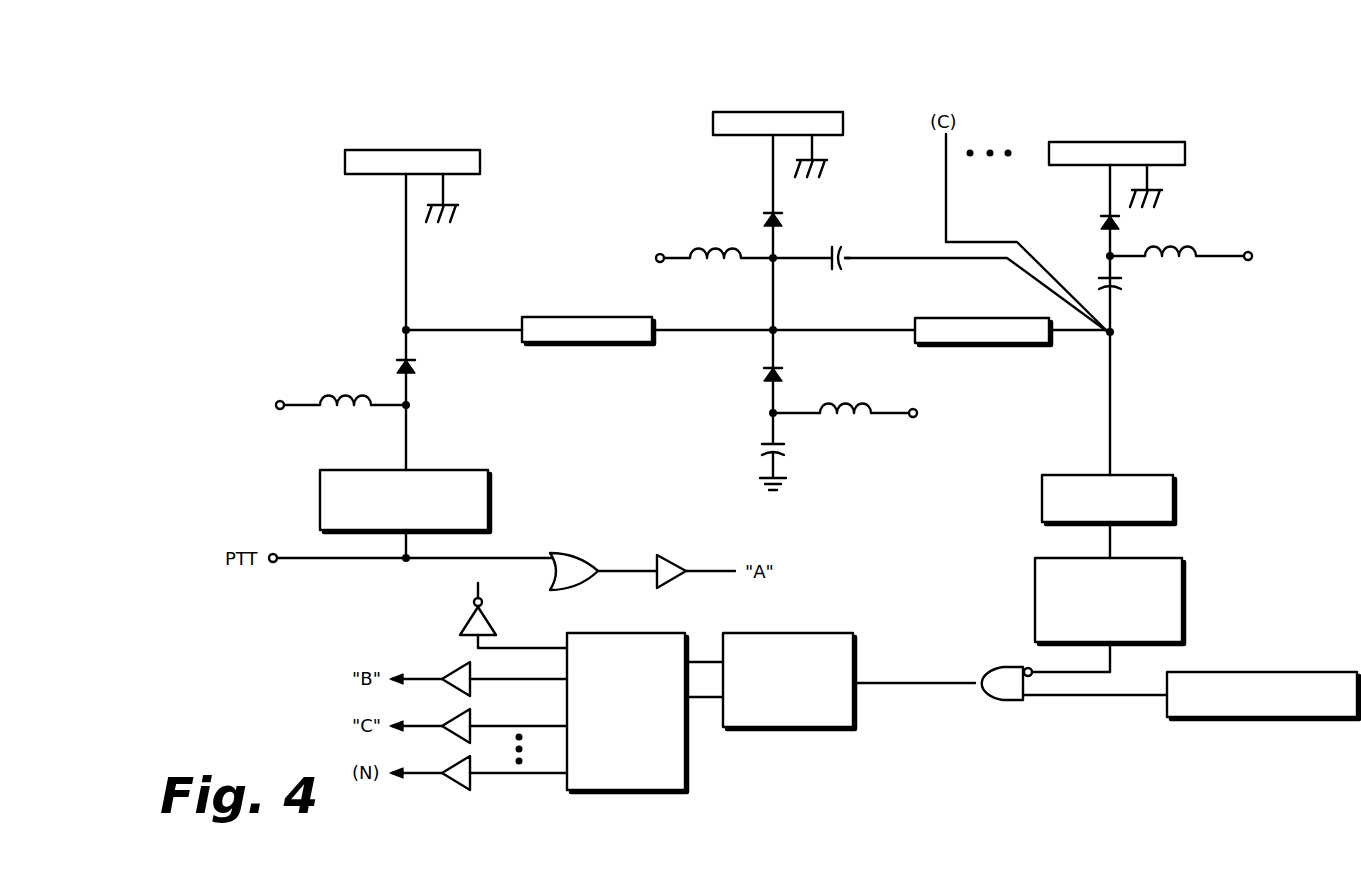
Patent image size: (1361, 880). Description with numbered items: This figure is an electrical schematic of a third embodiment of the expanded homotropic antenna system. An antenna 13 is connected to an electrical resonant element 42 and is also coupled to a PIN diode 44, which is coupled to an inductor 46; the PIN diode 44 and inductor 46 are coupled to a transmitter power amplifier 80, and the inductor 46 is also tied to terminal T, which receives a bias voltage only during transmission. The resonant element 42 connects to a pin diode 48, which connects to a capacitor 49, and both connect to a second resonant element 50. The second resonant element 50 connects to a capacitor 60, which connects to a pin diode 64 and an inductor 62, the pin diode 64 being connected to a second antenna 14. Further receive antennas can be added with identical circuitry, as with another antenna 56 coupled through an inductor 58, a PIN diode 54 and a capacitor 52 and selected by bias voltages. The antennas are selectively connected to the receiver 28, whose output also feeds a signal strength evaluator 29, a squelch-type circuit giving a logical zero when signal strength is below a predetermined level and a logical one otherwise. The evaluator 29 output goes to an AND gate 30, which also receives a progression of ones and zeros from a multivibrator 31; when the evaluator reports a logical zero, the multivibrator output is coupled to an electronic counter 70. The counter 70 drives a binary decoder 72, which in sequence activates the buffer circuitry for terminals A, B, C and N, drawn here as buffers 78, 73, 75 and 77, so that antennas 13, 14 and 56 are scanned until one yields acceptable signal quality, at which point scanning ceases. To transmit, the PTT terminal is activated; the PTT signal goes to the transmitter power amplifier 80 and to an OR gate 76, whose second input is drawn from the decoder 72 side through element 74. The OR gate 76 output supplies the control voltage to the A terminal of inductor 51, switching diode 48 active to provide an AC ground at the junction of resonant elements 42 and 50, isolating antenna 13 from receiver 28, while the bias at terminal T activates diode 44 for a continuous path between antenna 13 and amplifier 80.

The antenna 13 is at (481, 163).
The second antenna 14 is at (844, 125).
The antenna 56 is at (1186, 155).
The PIN diode 44 is at (416, 370).
The inductor 46 is at (350, 416).
The transmitter power amplifier 80 is at (470, 470).
The electrical resonant element 42 is at (598, 343).
The second resonant element 50 is at (960, 344).
The inductor 62 is at (712, 249).
The pin diode 64 is at (783, 222).
The capacitor 60 is at (838, 270).
The PIN diode 54 is at (1099, 226).
The inductor 58 is at (1186, 247).
The capacitor 52 is at (1123, 284).
The pin diode 48 is at (783, 377).
The inductor 51 is at (846, 404).
The capacitor 49 is at (786, 450).
The receiver 28 is at (1178, 490).
The signal strength evaluator 29 is at (1185, 580).
The multivibrator 31 is at (1300, 672).
The AND gate 30 is at (985, 699).
The electronic counter 70 is at (815, 633).
The binary decoder 72 is at (670, 633).
The inverter 74 is at (462, 625).
The OR gate 76 is at (576, 553).
The buffer A 78 is at (672, 556).
The buffer B 73 is at (455, 692).
The buffer C 75 is at (455, 739).
The buffer N 77 is at (455, 786).